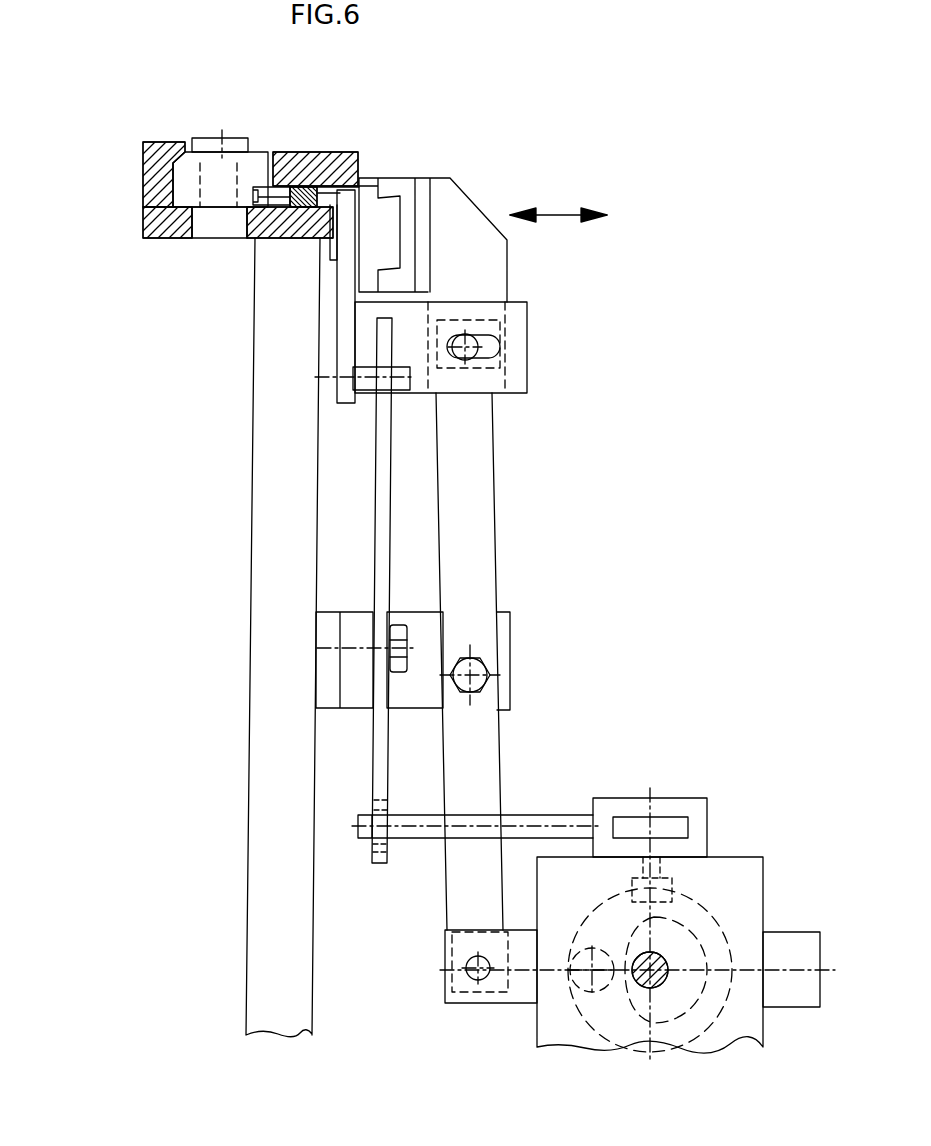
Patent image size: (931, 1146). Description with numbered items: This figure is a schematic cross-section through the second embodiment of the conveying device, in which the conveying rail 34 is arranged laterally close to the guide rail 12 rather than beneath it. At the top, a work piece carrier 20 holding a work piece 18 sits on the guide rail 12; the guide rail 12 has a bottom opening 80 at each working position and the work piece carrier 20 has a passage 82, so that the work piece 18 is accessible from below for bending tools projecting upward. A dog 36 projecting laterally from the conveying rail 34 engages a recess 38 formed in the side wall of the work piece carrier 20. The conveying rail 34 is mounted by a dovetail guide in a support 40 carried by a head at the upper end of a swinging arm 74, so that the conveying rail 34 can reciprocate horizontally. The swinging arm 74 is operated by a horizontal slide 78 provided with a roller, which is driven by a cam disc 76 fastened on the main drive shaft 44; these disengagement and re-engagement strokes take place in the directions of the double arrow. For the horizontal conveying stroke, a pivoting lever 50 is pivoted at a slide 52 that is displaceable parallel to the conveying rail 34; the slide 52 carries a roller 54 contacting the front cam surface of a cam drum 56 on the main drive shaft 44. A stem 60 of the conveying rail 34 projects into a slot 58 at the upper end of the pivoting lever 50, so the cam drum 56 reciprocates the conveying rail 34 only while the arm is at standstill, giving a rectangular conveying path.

The guide rail 12 is at (158, 217).
The work piece 18 is at (192, 165).
The work piece carrier 20 is at (182, 185).
The conveying rail 34 is at (318, 156).
The dog 36 is at (253, 235).
The recess 38 is at (255, 187).
The support 40 is at (407, 190).
The main drive shaft 44 is at (768, 966).
The pivoting lever 50 is at (388, 495).
The slide 52 is at (633, 823).
The roller 54 is at (675, 883).
The cam drum 56 is at (728, 943).
The slot 58 is at (385, 397).
The stem 60 is at (365, 387).
The swinging arm 74 is at (488, 492).
The cam disc 76 is at (680, 945).
The horizontal slide 78 is at (523, 987).
The bottom opening 80 is at (197, 218).
The passage 82 is at (198, 142).